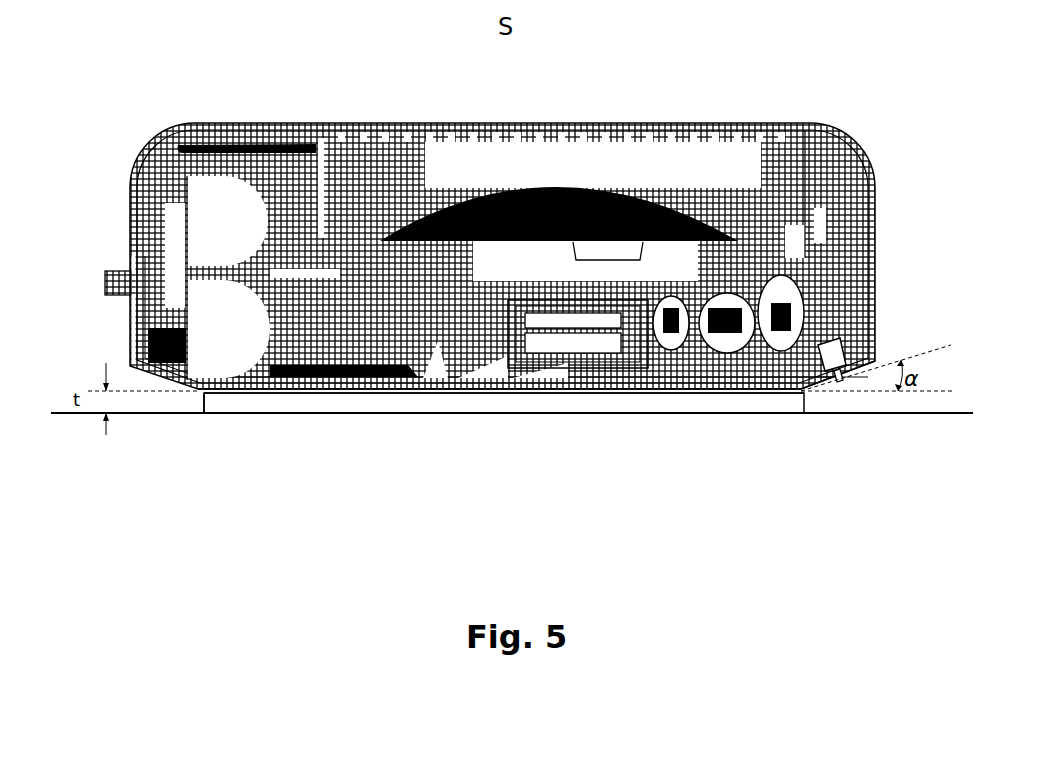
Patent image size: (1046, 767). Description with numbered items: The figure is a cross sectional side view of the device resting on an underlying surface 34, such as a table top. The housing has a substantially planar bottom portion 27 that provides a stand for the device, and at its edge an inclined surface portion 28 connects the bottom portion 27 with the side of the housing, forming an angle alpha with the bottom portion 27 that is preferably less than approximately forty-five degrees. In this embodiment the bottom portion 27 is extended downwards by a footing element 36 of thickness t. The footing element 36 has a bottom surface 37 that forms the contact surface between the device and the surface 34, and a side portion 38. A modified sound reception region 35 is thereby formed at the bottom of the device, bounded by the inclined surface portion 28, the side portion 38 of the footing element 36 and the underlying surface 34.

The bottom portion 27 is at (648, 385).
The inclined surface portion 28 is at (848, 368).
The surface 34 is at (905, 406).
The sound reception region 35 is at (830, 393).
The footing element 36 is at (533, 393).
The bottom surface 37 is at (340, 394).
The side portion 38 is at (196, 386).